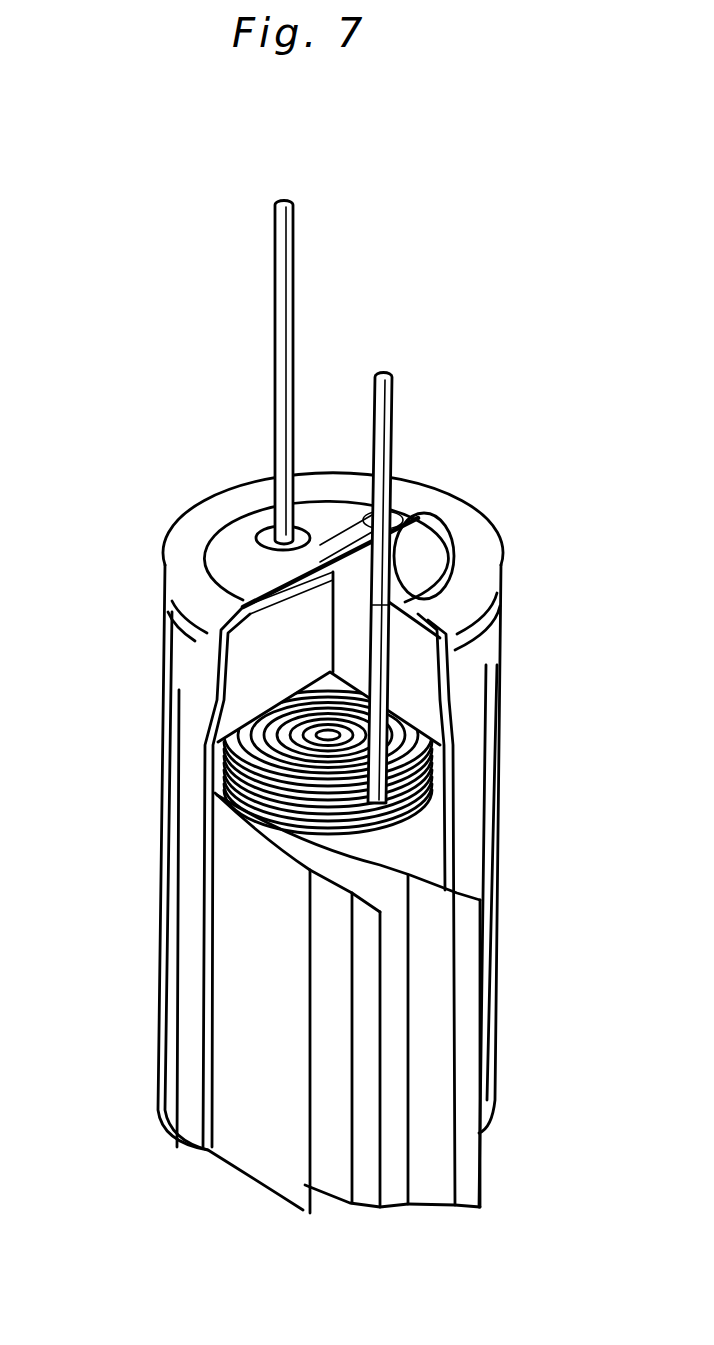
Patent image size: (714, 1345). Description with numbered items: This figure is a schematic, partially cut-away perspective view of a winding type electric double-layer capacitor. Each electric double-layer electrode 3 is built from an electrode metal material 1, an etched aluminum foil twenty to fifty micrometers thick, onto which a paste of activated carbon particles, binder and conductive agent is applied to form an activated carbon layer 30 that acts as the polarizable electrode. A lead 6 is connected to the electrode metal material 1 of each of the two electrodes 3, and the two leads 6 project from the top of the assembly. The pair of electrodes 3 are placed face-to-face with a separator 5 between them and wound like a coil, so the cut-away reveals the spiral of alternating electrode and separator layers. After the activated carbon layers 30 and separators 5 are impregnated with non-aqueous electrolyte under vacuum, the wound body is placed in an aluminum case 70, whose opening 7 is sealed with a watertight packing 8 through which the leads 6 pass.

The electrode metal material 1 is at (467, 1158).
The electric double-layer electrode 3 is at (443, 1279).
The separator 5 is at (268, 1005).
The lead 6 is at (392, 405).
The opening 7 is at (185, 533).
The watertight packing 8 is at (248, 672).
The activated carbon layer 30 is at (425, 1057).
The aluminum case 70 is at (188, 880).